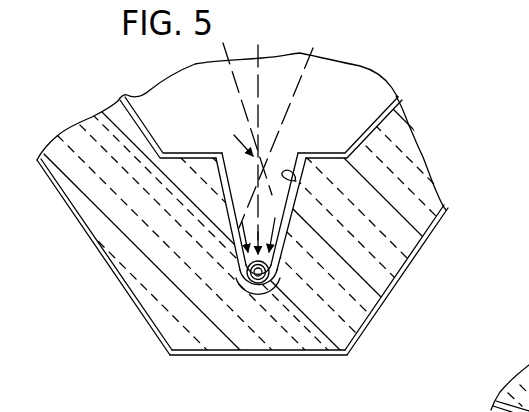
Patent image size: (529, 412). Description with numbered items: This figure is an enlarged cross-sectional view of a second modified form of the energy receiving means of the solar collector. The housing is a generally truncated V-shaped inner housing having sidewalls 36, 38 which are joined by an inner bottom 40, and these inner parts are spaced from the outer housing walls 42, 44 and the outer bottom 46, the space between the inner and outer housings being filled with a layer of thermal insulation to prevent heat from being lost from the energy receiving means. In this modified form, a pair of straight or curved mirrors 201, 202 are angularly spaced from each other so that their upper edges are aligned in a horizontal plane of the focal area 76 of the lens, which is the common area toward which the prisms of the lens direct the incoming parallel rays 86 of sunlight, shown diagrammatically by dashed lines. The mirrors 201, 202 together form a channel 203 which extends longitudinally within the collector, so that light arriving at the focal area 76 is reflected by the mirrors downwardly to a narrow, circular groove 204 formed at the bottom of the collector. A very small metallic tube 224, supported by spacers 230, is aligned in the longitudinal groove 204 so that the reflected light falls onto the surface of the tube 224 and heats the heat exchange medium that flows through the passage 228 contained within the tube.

The sidewall 36 is at (390, 88).
The sidewall 38 is at (133, 113).
The inner bottom 40 is at (334, 152).
The outer housing wall 42 is at (447, 209).
The outer housing wall 44 is at (84, 232).
The bottom 46 is at (347, 355).
The focal area 76 is at (230, 140).
The incoming parallel ray of sunlight 86 is at (315, 57).
The mirror 201 is at (222, 203).
The mirror 202 is at (296, 181).
The channel 203 is at (302, 204).
The circular groove 204 is at (245, 265).
The metallic tube 224 is at (270, 277).
The passage 228 is at (268, 266).
The spacer 230 is at (273, 295).